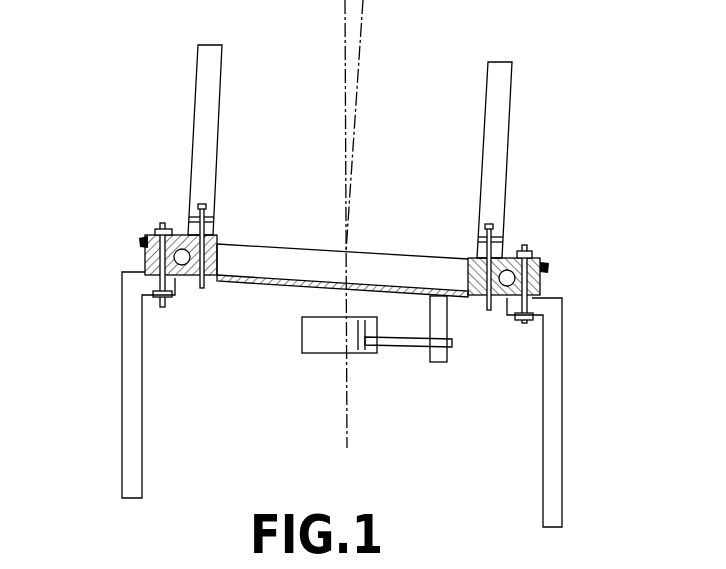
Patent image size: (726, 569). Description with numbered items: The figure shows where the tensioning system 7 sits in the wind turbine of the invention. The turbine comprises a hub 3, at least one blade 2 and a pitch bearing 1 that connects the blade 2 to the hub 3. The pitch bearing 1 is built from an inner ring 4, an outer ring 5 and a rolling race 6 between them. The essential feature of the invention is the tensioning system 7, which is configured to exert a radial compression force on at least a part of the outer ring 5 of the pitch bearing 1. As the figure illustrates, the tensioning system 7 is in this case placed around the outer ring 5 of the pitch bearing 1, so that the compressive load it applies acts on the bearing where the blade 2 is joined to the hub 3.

The pitch bearing 1 is at (556, 285).
The blade 2 is at (207, 90).
The hub 3 is at (552, 417).
The inner ring 4 is at (212, 243).
The outer ring 5 is at (145, 258).
The rolling race 6 is at (186, 264).
The tensioning system 7 is at (143, 241).